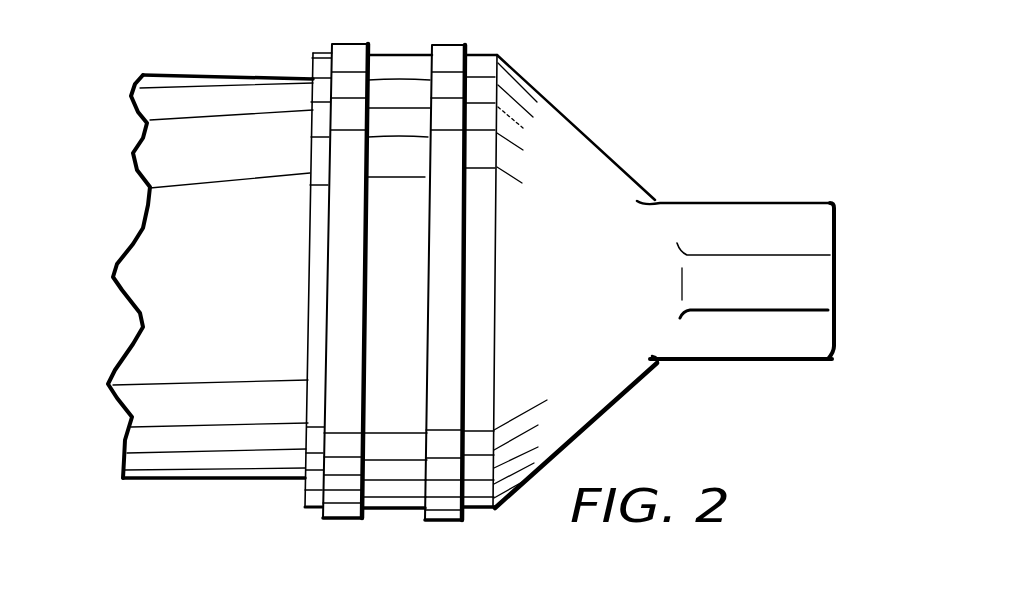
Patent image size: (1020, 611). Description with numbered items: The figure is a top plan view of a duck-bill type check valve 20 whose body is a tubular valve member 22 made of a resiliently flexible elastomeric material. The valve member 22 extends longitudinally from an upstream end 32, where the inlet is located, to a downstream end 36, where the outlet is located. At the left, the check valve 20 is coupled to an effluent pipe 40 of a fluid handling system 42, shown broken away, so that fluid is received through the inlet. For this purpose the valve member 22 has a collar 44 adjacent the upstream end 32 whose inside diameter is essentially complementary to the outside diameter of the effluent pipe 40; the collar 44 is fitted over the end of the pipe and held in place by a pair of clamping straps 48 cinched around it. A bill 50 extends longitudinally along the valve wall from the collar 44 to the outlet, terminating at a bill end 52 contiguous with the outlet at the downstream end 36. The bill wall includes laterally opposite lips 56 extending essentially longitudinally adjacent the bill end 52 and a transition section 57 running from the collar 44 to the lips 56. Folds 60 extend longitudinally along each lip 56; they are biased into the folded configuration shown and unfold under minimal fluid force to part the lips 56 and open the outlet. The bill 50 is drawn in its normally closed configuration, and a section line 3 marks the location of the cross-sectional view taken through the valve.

The check valve 20 is at (533, 72).
The tubular valve member 22 is at (566, 118).
The transition section 57 is at (597, 163).
The folds 60 is at (703, 218).
The bill 50 is at (746, 196).
The lips 56 is at (773, 255).
The bill end 52 is at (837, 272).
The downstream end 36 is at (833, 350).
The upstream end 32 is at (305, 490).
The clamping straps 48 is at (330, 525).
The collar 44 is at (393, 495).
The effluent pipe 40 is at (212, 465).
The fluid handling system 42 is at (152, 492).
The section line 3- 3 is at (80, 302).